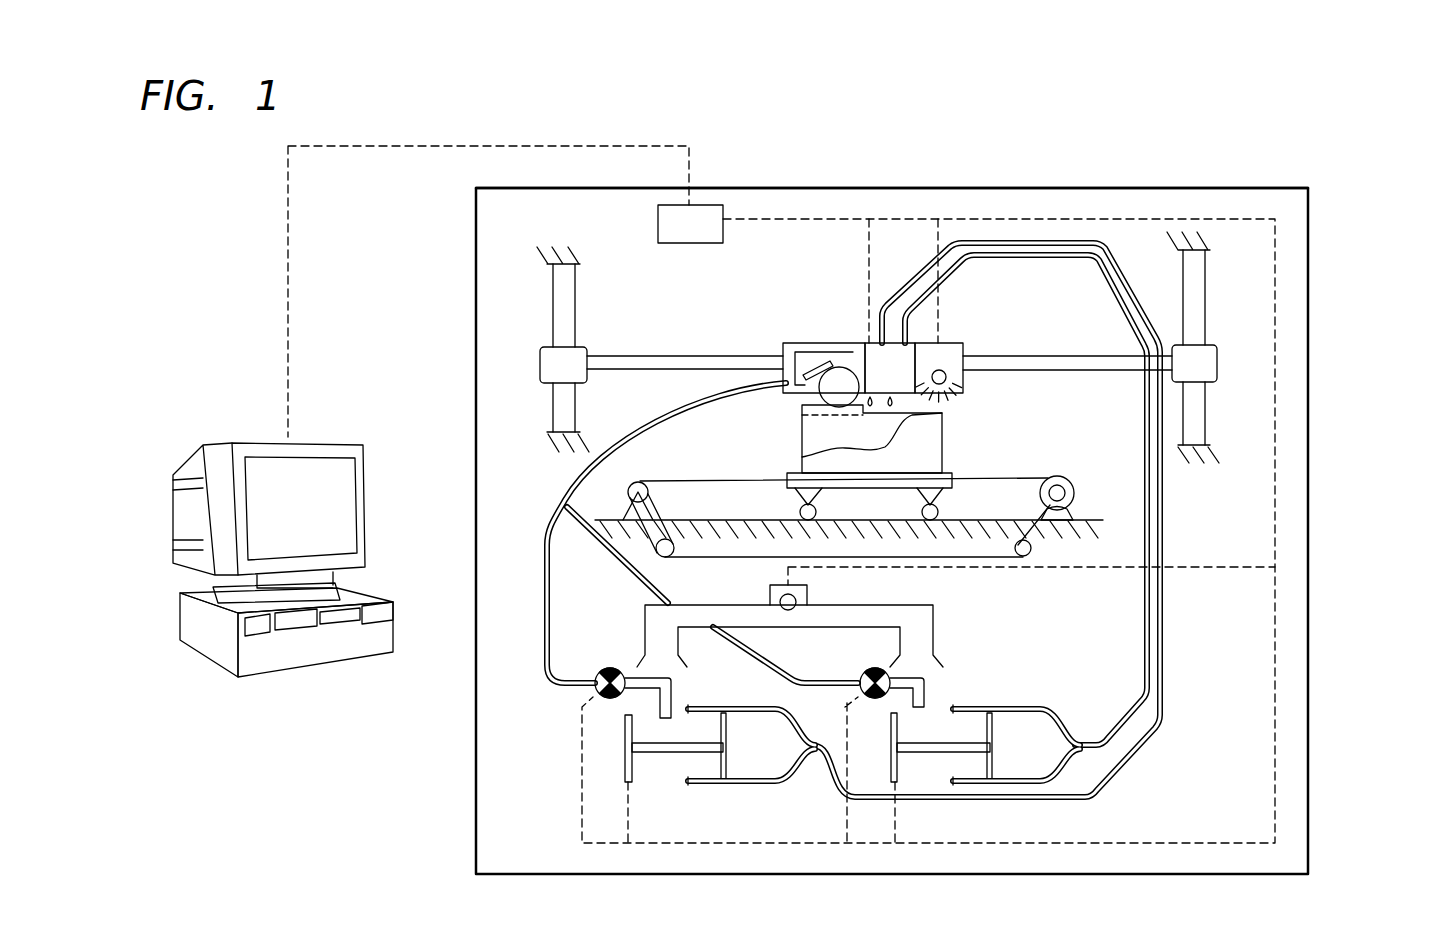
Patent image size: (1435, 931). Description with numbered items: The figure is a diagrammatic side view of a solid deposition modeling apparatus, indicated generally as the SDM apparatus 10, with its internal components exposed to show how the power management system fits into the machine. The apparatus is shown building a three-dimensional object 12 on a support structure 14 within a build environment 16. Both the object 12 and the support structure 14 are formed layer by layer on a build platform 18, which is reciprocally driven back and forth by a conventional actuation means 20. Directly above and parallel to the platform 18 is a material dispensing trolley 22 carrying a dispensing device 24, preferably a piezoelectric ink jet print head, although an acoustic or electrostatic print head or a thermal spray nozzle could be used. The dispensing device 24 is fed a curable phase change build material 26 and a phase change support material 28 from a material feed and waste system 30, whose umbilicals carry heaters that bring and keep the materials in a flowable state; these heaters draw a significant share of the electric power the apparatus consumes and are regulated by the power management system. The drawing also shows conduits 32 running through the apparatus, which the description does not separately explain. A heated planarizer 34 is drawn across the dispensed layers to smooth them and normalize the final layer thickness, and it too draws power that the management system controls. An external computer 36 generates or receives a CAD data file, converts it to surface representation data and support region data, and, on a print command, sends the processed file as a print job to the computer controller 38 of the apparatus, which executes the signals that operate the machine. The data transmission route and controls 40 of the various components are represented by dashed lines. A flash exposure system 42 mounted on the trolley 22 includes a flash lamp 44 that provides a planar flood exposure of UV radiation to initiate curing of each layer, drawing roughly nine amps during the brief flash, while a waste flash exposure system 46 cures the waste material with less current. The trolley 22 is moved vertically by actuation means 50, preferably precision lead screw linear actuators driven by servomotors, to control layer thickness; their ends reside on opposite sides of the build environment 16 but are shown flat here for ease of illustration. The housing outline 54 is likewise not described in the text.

The SDM apparatus 10 is at (1333, 218).
The three-dimensional object 12 is at (868, 445).
The support structure 14 is at (872, 439).
The build environment 16 is at (903, 360).
The build platform 18 is at (797, 473).
The actuation means 20 is at (1062, 480).
The material dispensing trolley 22 is at (795, 342).
The dispensing device 24 is at (906, 381).
The curable phase change build material 26 is at (769, 758).
The phase change support material 28 is at (1036, 762).
The material feed and waste system 30 is at (844, 678).
The fluid conduit 32 is at (572, 490).
The heated planarizer 34 is at (795, 398).
The external computer 36 is at (295, 660).
The computer controller 38 is at (706, 241).
The data transmission route and controls 40 is at (1035, 219).
The flash exposure system 42 is at (991, 369).
The flash lamp 44 is at (946, 372).
The waste flash exposure system 46 is at (832, 592).
The actuation means 50 is at (565, 303).
The housing 54 is at (797, 188).